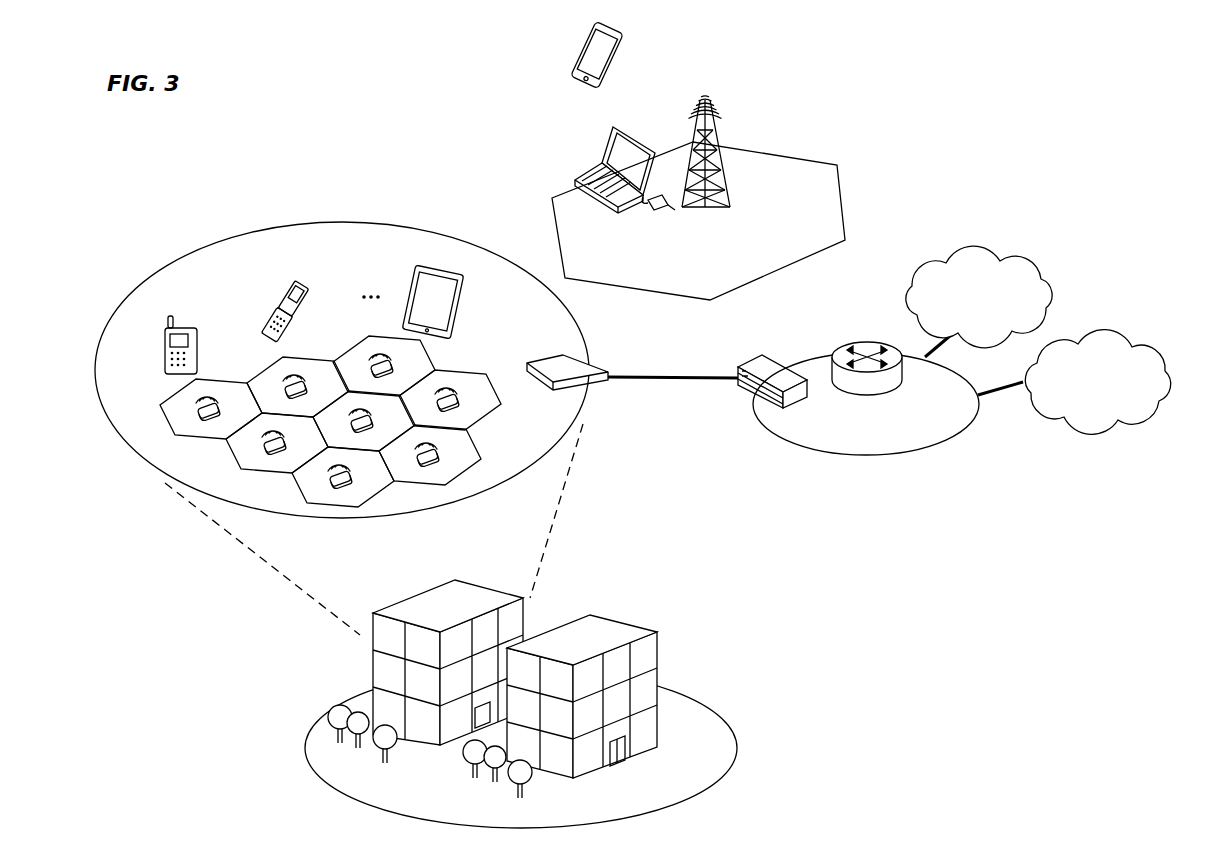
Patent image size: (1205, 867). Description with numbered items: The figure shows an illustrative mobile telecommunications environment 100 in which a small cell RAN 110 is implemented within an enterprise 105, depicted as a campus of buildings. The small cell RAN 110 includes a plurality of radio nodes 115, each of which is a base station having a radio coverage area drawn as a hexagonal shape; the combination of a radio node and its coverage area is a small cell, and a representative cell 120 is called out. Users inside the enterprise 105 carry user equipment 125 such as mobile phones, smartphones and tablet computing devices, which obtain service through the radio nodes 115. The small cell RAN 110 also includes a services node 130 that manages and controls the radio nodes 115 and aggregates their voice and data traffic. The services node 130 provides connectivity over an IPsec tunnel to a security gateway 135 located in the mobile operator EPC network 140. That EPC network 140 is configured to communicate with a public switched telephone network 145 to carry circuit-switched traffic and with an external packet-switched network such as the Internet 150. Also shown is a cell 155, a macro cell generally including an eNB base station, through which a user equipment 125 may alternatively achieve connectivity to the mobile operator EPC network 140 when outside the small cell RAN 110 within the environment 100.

The mobile telecommunications environment 100 is at (1078, 193).
The enterprise 105 is at (305, 735).
The small cell RAN 110 is at (314, 226).
The radio node 115 is at (466, 400).
The cell 120 is at (476, 380).
The user equipment 125 is at (199, 338).
The services node 130 is at (600, 361).
The security gateway 135 is at (765, 355).
The mobile operator EPC network 140 is at (835, 457).
The public switched telephone network 145 is at (1112, 338).
The Internet 150 is at (948, 254).
The cell 155 is at (825, 163).